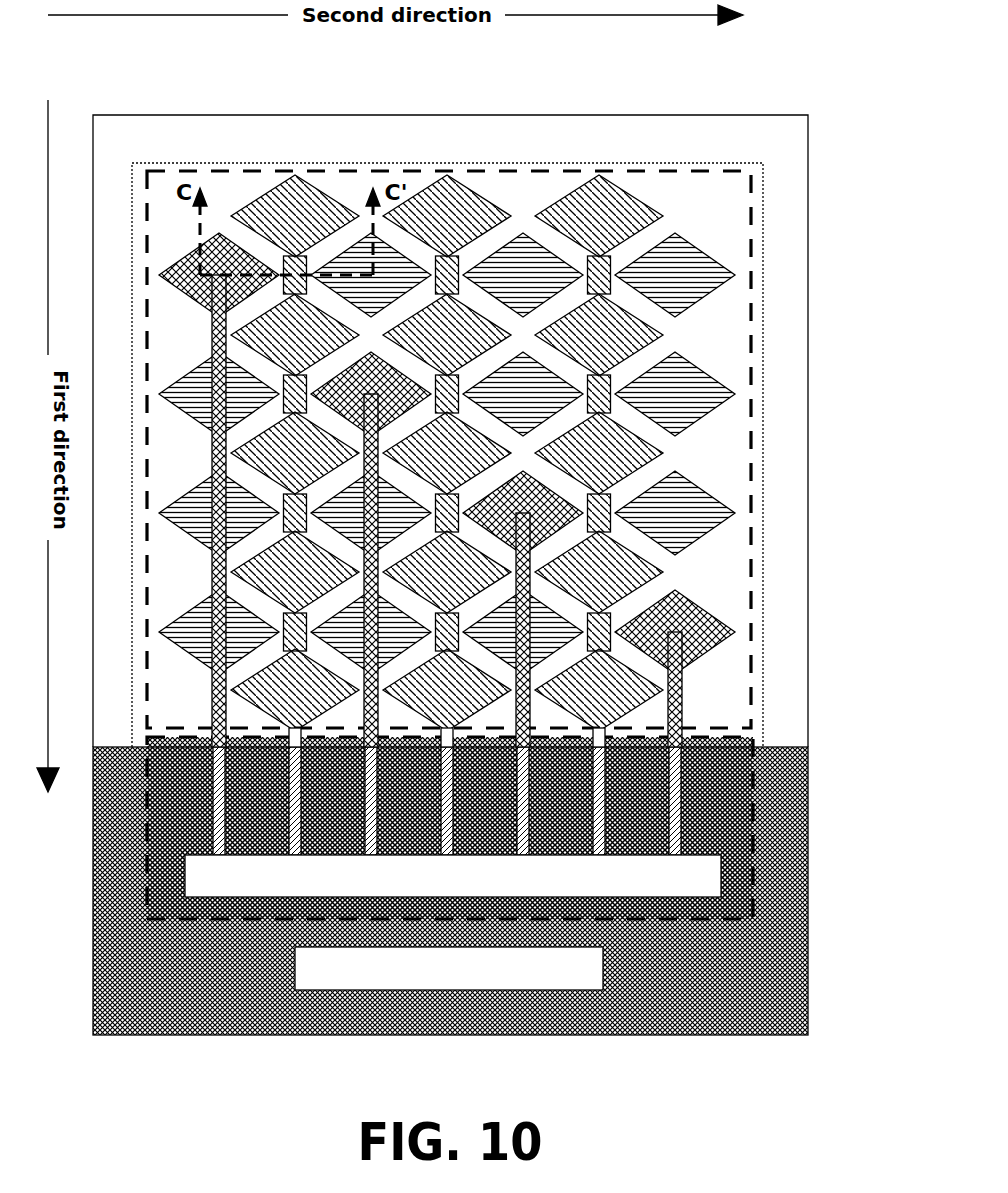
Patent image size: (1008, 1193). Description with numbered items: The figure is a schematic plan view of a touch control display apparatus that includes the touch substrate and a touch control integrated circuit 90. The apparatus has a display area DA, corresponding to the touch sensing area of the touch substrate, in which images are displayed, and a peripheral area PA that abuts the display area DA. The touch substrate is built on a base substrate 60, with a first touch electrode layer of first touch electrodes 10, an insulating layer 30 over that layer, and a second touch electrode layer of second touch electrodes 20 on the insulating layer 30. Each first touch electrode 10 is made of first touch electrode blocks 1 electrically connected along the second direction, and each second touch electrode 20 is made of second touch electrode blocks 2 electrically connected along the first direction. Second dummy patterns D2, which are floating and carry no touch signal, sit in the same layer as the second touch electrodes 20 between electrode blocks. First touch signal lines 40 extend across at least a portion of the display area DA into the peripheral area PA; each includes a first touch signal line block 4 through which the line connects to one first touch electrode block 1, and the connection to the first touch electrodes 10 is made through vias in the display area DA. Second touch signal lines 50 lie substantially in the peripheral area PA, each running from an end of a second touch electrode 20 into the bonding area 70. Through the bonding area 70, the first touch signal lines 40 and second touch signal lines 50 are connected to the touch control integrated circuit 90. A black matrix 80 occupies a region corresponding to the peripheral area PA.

The first touch electrode block 1 is at (675, 513).
The second touch electrode block 2 is at (599, 216).
The first touch signal line block 4 is at (371, 394).
The first touch electrode 10 is at (520, 513).
The second touch electrode 20 is at (599, 385).
The insulating layer 30 is at (764, 686).
The first touch signal line 40 is at (450, 828).
The second touch signal line 50 is at (447, 801).
The base substrate 60 is at (808, 614).
The bonding area 70 is at (453, 876).
The black matrix 80 is at (783, 873).
The touch control integrated circuit 90 is at (449, 968).
The second dummy pattern D2 is at (523, 275).
The display area DA is at (751, 342).
The peripheral area PA is at (808, 816).